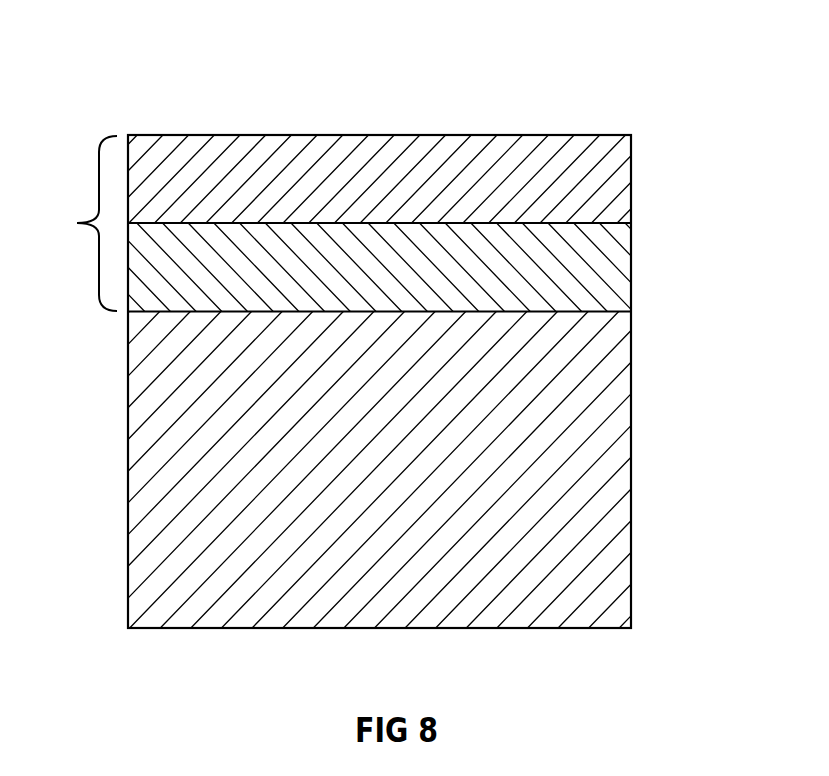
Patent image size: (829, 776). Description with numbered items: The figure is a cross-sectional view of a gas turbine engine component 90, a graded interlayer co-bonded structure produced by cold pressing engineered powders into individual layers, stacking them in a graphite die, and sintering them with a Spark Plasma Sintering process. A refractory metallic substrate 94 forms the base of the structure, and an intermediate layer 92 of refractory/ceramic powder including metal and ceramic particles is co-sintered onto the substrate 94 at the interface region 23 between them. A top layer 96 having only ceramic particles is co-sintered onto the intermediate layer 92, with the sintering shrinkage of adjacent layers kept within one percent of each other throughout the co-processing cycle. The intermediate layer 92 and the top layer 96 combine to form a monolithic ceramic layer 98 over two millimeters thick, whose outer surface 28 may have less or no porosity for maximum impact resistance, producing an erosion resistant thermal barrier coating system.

The graded interlayer co-bonded structure 90 is at (688, 363).
The top layer 96 is at (605, 181).
The intermediate layer 92 is at (607, 269).
The substrate 94 is at (607, 466).
The monolithic ceramic layer 98 is at (336, 223).
The outer surface 28 is at (370, 136).
The interface region 23 is at (178, 313).